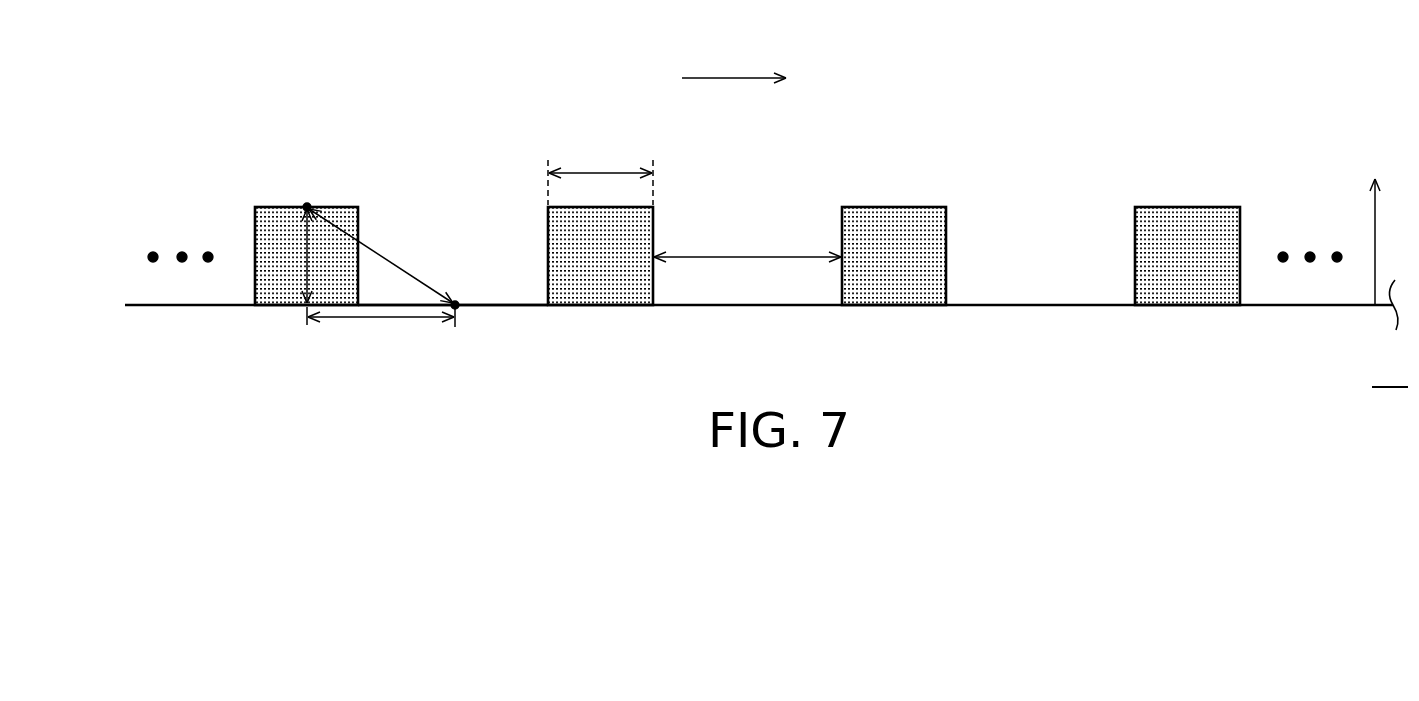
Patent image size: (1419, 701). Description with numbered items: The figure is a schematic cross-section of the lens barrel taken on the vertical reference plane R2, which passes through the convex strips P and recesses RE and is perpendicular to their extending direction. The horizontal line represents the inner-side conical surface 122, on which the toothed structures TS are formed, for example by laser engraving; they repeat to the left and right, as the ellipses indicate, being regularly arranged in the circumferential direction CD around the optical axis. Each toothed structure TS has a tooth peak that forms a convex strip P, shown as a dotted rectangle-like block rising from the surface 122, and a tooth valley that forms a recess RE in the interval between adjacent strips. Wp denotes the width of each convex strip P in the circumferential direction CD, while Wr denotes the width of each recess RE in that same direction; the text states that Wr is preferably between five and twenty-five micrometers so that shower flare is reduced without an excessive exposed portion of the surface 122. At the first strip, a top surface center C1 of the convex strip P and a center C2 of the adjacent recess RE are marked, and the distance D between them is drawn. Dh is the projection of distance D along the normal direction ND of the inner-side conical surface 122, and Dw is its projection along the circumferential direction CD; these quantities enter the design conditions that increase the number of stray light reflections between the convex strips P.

The inner-side conical surface 122 is at (162, 307).
The convex strip P is at (280, 285).
The toothed structures TS is at (260, 114).
The recess RE is at (458, 220).
The top surface center C1 is at (307, 205).
The center of the recess C2 is at (457, 302).
The distance D is at (377, 252).
The first projection amount Dh is at (323, 256).
The projection amount along circumferential direction Dw is at (381, 332).
The width of convex strip Wp is at (600, 167).
The width of recess Wr is at (747, 236).
The circumferential direction CD is at (734, 56).
The normal direction ND is at (1377, 222).
The vertical reference plane R2 is at (1390, 372).